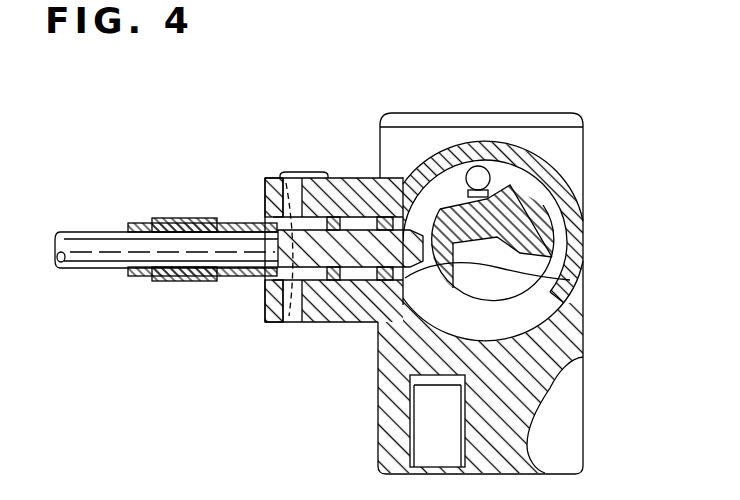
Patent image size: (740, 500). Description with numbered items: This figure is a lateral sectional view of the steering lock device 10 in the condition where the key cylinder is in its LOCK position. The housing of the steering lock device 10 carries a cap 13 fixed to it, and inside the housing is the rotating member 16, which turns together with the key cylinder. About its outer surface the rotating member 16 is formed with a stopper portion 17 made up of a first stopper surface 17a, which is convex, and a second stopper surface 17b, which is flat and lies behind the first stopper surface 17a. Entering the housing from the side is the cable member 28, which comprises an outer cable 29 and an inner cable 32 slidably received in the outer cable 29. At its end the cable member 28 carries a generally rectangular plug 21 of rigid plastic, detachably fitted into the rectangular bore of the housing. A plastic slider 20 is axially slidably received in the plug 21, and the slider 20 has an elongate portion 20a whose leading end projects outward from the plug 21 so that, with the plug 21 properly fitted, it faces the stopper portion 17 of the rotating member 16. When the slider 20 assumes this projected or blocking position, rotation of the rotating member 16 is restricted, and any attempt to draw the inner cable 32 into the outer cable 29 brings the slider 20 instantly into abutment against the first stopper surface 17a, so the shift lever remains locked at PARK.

The steering lock device 10 is at (266, 149).
The cap 13 is at (557, 0).
The rotating member 16 is at (548, 212).
The stopper portion 17 is at (448, 210).
The first stopper surface 17a is at (355, 322).
The second stopper surface 17b is at (570, 280).
The slider 20 is at (300, 258).
The elongate portion 20a is at (307, 175).
The plug 21 is at (262, 215).
The cable member 28 is at (169, 287).
The outer cable 29 is at (93, 257).
The inner cable 32 is at (265, 200).